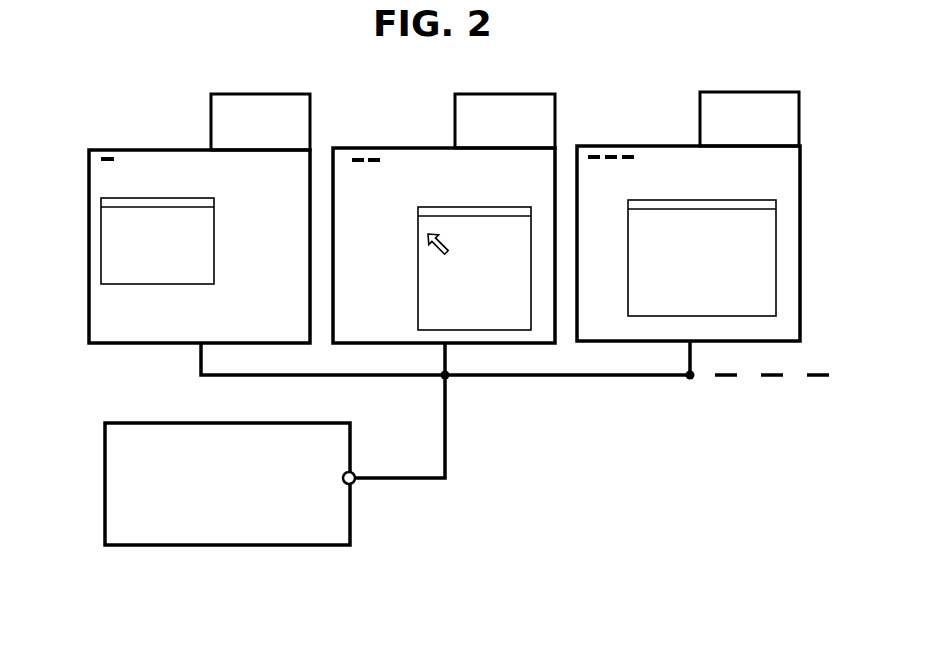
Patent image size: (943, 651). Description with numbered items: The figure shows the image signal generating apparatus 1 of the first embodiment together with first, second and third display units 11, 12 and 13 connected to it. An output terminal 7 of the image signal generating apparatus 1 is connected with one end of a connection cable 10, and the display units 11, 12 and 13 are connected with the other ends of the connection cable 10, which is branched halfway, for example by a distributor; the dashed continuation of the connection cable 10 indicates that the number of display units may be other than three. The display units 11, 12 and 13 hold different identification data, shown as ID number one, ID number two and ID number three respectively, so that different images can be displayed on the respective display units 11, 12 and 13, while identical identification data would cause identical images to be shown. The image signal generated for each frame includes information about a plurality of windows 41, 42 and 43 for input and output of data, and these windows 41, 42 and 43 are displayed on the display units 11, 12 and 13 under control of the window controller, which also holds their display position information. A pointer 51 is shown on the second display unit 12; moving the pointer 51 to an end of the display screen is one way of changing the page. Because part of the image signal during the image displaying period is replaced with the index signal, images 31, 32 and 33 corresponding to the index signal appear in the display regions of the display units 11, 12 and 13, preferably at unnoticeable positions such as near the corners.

The image signal generating apparatus 1 is at (235, 547).
The output terminal 7 is at (352, 470).
The connection cable 10 is at (428, 481).
The first display unit 11 is at (166, 149).
The second display unit 12 is at (400, 148).
The third display unit 13 is at (648, 146).
The image corresponding to index signal 31 is at (108, 149).
The image corresponding to index signal 32 is at (363, 157).
The image corresponding to index signal 33 is at (622, 155).
The window 41 is at (187, 198).
The window 42 is at (470, 209).
The window 43 is at (702, 200).
The pointer 51 is at (440, 255).